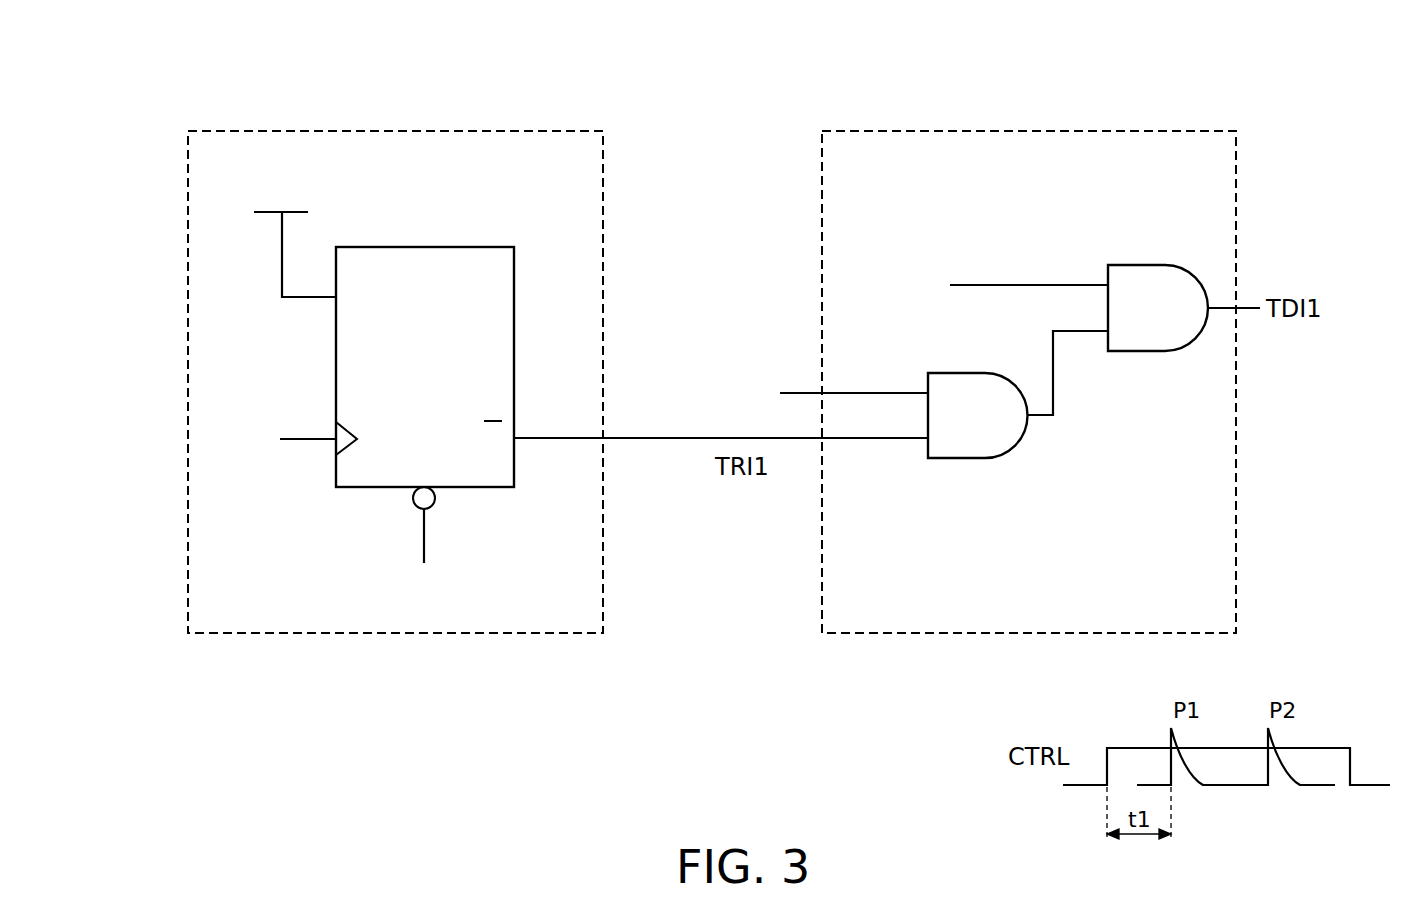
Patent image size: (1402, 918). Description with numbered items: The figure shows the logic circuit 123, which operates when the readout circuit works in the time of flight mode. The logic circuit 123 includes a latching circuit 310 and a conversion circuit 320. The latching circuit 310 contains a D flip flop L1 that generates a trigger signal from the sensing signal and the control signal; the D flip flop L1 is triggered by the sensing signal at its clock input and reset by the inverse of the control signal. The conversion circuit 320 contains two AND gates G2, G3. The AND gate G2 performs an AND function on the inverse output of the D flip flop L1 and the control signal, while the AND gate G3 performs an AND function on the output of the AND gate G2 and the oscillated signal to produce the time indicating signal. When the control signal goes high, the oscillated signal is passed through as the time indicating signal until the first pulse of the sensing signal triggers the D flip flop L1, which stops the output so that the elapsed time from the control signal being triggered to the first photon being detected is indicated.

The logic circuit 123 is at (115, 91).
The latching circuit 310 is at (396, 131).
The conversion circuit 320 is at (1083, 131).
The D flip flop L1 is at (483, 488).
The AND gate G2 is at (953, 459).
The AND gate G3 is at (1133, 352).